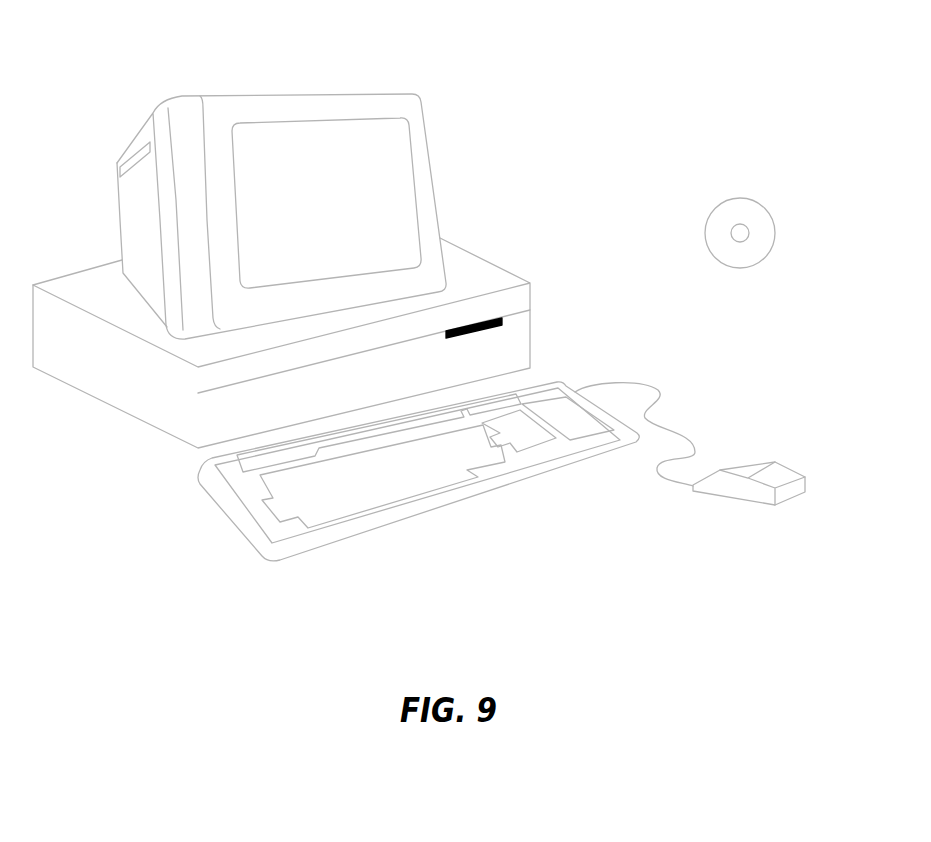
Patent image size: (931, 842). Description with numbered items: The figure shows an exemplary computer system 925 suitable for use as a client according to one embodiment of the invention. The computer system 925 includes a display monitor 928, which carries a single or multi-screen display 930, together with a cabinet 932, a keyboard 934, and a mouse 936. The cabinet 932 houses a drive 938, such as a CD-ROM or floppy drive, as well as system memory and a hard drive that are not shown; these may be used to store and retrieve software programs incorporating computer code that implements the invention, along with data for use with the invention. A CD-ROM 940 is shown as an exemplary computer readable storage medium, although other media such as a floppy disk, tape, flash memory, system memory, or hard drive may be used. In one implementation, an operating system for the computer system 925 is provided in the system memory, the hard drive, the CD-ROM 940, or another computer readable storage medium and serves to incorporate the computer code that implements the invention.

The computer system 925 is at (658, 67).
The display monitor 928 is at (440, 218).
The display 930 is at (397, 160).
The cabinet 932 is at (157, 430).
The keyboard 934 is at (420, 516).
The mouse 936 is at (792, 468).
The drive 938 is at (502, 322).
The CD-ROM 940 is at (757, 202).